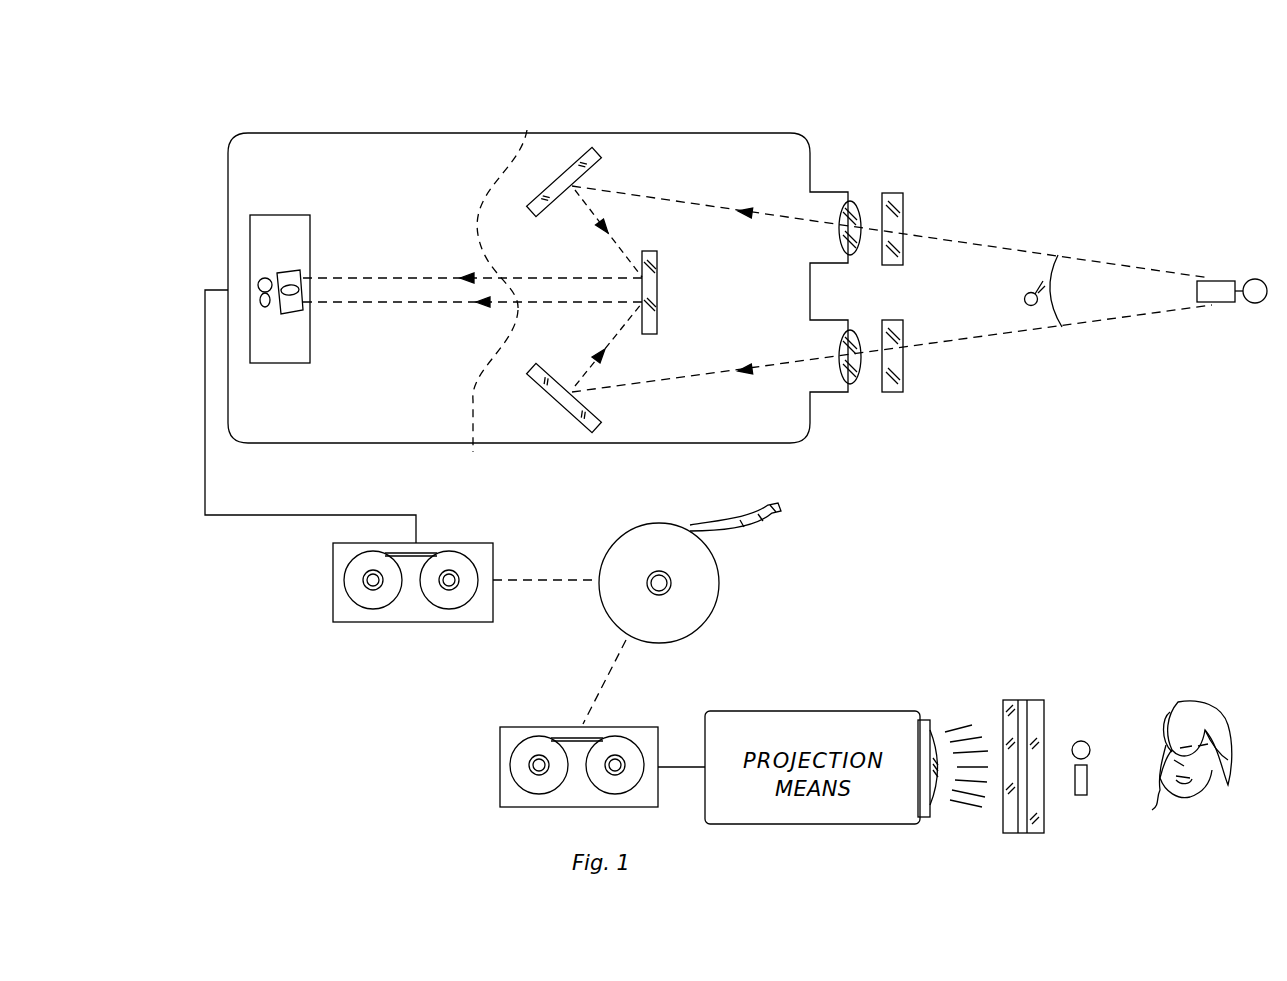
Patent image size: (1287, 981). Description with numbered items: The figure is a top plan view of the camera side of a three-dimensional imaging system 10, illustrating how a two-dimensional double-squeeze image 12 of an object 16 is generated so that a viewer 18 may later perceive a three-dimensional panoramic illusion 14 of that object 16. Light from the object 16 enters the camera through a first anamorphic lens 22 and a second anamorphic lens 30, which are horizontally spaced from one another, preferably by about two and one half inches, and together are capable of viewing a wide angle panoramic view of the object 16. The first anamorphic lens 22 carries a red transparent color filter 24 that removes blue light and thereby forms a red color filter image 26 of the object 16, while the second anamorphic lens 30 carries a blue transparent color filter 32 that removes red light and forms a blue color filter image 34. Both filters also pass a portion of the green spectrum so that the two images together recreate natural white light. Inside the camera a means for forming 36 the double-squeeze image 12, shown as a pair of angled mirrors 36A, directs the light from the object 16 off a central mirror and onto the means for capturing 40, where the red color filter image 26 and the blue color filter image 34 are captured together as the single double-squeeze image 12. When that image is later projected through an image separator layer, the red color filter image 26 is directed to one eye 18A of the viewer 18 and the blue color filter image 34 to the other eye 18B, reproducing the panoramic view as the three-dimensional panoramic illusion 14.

The 3-D imaging system 10 is at (980, 82).
The 2-D double-squeeze image 12 is at (290, 270).
The 3-D panoramic illusion 14 is at (1084, 741).
The object 16 is at (1226, 304).
The viewer 18 is at (1178, 702).
The one eye 18A is at (1160, 745).
The other eye 18B is at (1212, 738).
The first anamorphic lens 22 is at (856, 200).
The red transparent color filter 24 is at (900, 200).
The red color filter image 26 is at (508, 205).
The second anamorphic lens 30 is at (847, 386).
The blue transparent color filter 32 is at (893, 394).
The blue color filter image 34 is at (492, 396).
The means for forming 36 is at (638, 172).
The angled mirrors 36A is at (596, 160).
The means for capturing 40 is at (272, 232).